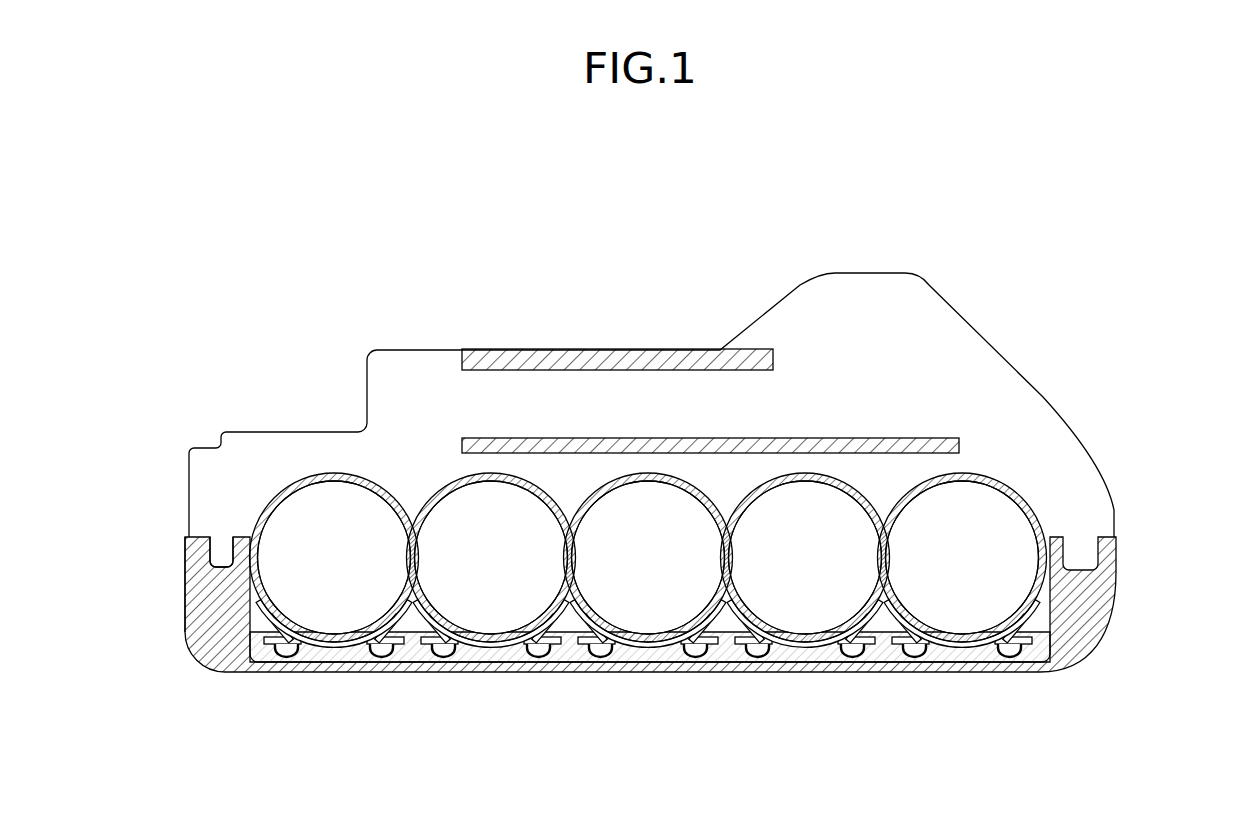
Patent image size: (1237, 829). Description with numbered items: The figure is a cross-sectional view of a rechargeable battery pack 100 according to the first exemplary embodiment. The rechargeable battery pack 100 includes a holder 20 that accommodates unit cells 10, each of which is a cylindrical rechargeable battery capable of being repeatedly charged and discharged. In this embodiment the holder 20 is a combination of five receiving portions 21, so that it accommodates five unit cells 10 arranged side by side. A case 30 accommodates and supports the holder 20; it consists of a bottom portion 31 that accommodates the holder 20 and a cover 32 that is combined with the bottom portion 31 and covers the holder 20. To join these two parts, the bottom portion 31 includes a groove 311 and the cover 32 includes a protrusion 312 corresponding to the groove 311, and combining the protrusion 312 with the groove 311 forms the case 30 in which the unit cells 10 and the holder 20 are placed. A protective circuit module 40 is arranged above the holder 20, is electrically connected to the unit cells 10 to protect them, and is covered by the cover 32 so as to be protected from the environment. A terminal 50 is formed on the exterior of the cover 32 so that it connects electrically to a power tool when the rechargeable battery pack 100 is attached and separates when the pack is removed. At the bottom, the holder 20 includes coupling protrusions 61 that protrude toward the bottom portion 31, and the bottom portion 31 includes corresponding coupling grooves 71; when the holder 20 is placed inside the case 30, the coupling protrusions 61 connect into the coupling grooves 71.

The rechargeable battery pack 100 is at (452, 248).
The unit cell 10 is at (988, 530).
The holder 20 is at (862, 478).
The receiving portion 21 is at (988, 477).
The case 30 is at (1189, 493).
The bottom portion 31 is at (646, 620).
The groove 311 is at (220, 547).
The protrusion 312 is at (226, 553).
The cover 32 is at (1095, 505).
The protective circuit module 40 is at (661, 445).
The terminal 50 is at (570, 360).
The coupling protrusion 61 is at (279, 652).
The coupling groove 71 is at (296, 650).